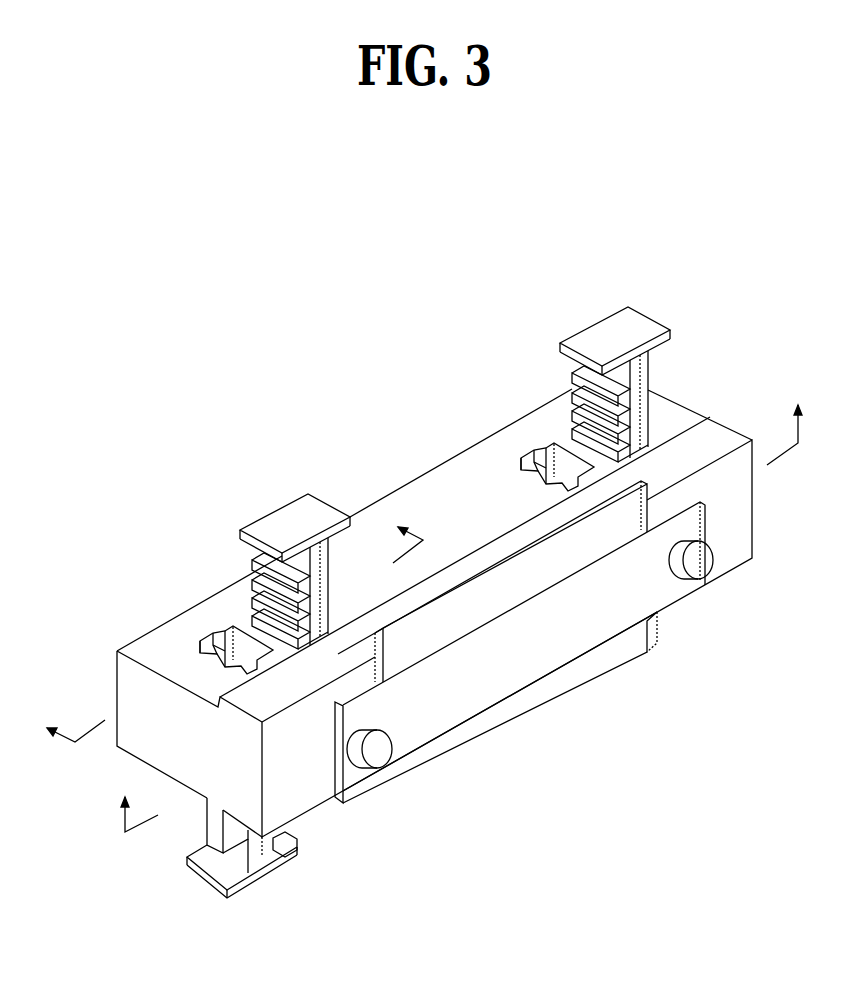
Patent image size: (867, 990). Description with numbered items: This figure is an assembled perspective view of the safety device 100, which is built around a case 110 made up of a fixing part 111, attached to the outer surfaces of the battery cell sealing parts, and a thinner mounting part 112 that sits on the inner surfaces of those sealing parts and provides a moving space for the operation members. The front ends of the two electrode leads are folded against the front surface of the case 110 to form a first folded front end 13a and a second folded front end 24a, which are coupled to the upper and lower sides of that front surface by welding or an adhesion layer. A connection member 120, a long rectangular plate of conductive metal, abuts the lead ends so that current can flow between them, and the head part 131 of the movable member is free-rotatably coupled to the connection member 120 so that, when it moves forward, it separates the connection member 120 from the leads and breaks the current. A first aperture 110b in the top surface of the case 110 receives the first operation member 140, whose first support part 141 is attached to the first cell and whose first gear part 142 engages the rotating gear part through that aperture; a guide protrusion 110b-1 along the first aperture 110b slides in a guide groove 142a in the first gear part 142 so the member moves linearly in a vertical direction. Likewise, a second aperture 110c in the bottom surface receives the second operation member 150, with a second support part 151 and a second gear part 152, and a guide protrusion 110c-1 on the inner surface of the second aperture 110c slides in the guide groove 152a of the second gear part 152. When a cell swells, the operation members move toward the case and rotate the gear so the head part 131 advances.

The safety device 100 is at (395, 381).
The case 110 is at (762, 362).
The fixing part 111 is at (722, 443).
The mounting part 112 is at (667, 418).
The first aperture 110b is at (525, 460).
The guide protrusion 110b-1 is at (568, 482).
The second aperture 110c is at (243, 633).
The guide protrusion 110c-1 is at (205, 645).
The connection member 120 is at (470, 693).
The second folded front end 24a is at (572, 681).
The head part 131 is at (380, 751).
The first folded front end 13a is at (708, 513).
The first operation member 140 is at (323, 433).
The first support part 141 is at (270, 530).
The first gear part 142 is at (333, 557).
The guide groove 142a is at (330, 552).
The second operation member 150 is at (283, 930).
The second support part 151 is at (187, 870).
The second gear part 152 is at (220, 843).
The guide groove 152a is at (281, 847).